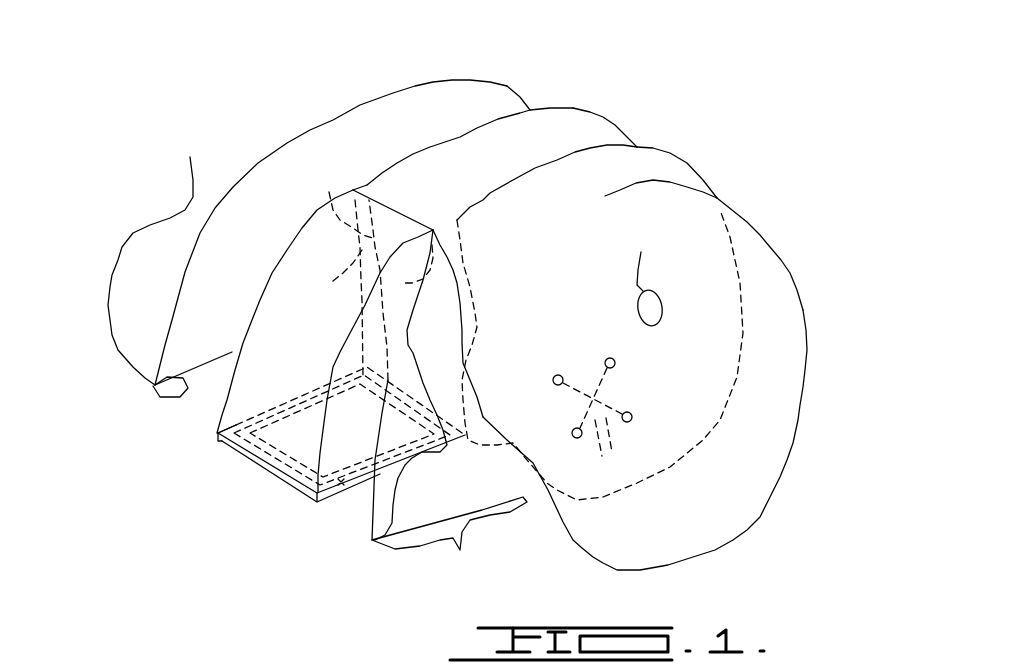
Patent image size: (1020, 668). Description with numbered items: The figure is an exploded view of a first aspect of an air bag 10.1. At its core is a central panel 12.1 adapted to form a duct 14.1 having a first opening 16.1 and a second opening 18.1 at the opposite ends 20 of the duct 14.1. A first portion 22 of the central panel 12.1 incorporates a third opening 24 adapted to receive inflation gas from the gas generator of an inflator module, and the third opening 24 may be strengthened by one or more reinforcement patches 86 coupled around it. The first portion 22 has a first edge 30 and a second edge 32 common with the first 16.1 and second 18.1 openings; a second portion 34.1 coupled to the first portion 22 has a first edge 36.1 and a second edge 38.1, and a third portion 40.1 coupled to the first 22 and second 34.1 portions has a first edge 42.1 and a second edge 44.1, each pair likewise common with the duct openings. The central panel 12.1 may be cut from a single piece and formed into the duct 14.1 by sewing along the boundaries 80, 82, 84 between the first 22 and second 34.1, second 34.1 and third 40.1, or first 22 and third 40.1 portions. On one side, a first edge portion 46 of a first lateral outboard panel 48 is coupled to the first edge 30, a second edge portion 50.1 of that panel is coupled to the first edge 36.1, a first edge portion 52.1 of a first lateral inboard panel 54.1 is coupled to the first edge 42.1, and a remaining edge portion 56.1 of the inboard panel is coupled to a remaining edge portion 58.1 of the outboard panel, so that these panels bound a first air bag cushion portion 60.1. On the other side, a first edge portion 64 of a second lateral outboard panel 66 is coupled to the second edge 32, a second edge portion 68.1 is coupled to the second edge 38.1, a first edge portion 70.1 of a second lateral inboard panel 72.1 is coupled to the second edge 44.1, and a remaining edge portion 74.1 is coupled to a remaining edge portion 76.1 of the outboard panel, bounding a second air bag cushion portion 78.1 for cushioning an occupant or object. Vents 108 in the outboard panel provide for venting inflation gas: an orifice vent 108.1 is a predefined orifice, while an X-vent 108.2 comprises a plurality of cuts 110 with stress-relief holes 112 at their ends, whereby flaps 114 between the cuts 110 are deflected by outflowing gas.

The air bag 10.1 is at (764, 66).
The central panel 12.1 is at (365, 367).
The duct 14.1 is at (207, 490).
The first opening 16.1 is at (313, 523).
The second opening 18.1 is at (198, 432).
The ends 20 is at (173, 506).
The first portion 22 is at (345, 490).
The third opening 24 is at (300, 400).
The first edge 30 is at (326, 517).
The second edge 32 is at (308, 433).
The second portion 34.1 is at (270, 272).
The first edge 36.1 is at (297, 507).
The second edge 38.1 is at (258, 298).
The third portion 40.1 is at (434, 217).
The first edge 42.1 is at (452, 246).
The second edge 44.1 is at (350, 278).
The first edge portion 46 is at (449, 538).
The first lateral outboard panel 48 is at (805, 312).
The second edge portion 50.1 is at (437, 445).
The first edge portion 52.1 is at (478, 331).
The first lateral inboard panel 54.1 is at (700, 175).
The remaining edge portion 56.1 is at (653, 147).
The remaining edge portion 58.1 is at (790, 268).
The first air bag cushion portion 60.1 is at (790, 208).
The first edge portion 64 is at (153, 383).
The second lateral outboard panel 66 is at (500, 84).
The second edge portion 68.1 is at (297, 145).
The first edge portion 70.1 is at (329, 192).
The second lateral inboard panel 72.1 is at (613, 118).
The remaining edge portion 74.1 is at (578, 107).
The remaining edge portion 76.1 is at (432, 78).
The second air bag cushion portion 78.1 is at (578, 52).
The boundary 80 is at (256, 455).
The boundary 82 is at (391, 172).
The boundary 84 is at (350, 455).
The reinforcement patch 86 is at (276, 455).
The vent 108 is at (643, 291).
The orifice vent 108.1 is at (661, 259).
The X-vent 108.2 is at (652, 388).
The cuts 110 is at (614, 450).
The stress-relief holes 112 is at (606, 362).
The flaps 114 is at (567, 403).